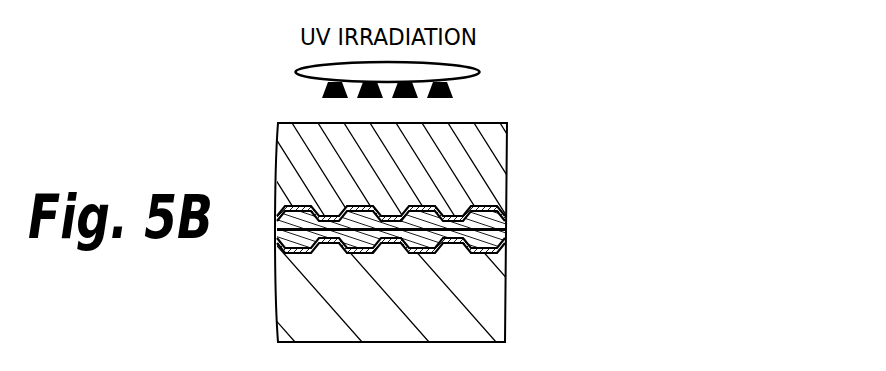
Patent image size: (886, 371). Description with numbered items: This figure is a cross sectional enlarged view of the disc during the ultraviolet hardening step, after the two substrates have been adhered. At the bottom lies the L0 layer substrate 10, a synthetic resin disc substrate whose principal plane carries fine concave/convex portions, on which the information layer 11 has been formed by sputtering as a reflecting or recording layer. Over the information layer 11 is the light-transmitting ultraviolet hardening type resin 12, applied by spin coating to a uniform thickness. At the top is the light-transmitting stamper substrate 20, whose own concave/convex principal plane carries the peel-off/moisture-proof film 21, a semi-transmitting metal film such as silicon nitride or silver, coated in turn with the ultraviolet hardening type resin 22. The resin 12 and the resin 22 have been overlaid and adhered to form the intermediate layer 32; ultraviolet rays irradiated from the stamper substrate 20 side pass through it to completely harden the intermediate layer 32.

The L0 layer substrate 10 is at (495, 297).
The information layer (L0 layer) 11 is at (503, 250).
The ultraviolet hardening type resin 12 is at (497, 236).
The stamper substrate 20 is at (495, 142).
The peel-off/moisture-proof film 21 is at (500, 207).
The ultraviolet hardening type resin 22 is at (497, 225).
The intermediate layer 32 is at (439, 229).